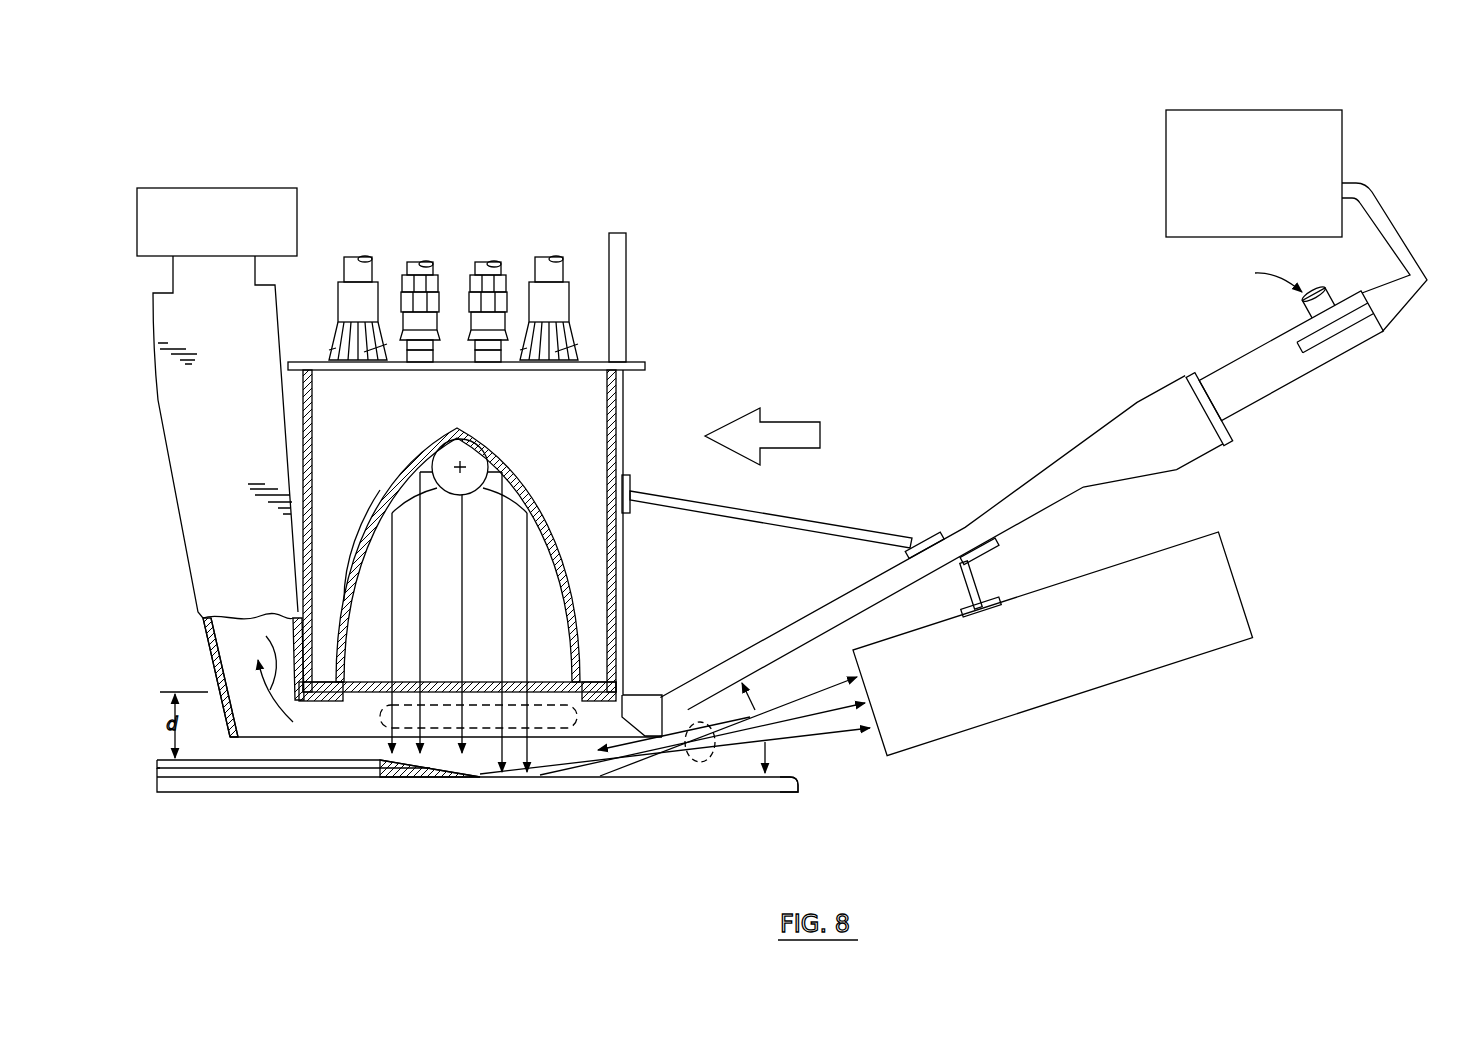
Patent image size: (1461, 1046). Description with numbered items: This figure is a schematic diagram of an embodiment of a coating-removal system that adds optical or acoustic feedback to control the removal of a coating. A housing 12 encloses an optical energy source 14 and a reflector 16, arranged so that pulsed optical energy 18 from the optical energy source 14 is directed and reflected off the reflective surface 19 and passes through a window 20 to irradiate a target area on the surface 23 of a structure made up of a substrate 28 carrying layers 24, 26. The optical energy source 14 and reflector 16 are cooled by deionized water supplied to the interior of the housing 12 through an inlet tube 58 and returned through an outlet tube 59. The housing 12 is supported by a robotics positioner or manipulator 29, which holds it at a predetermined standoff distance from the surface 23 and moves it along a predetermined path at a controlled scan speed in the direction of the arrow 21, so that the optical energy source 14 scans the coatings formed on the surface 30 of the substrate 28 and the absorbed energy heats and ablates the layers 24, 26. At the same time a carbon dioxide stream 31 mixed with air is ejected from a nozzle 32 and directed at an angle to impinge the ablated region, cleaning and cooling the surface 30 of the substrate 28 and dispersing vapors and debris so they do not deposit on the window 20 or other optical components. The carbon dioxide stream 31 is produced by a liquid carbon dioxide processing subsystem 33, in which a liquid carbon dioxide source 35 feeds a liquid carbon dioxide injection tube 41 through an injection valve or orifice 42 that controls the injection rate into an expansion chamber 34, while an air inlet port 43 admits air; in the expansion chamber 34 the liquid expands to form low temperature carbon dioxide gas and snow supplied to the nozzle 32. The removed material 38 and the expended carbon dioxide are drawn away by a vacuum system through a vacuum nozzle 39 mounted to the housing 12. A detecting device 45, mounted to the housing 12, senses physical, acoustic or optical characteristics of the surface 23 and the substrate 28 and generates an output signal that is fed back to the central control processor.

The housing 12 is at (612, 418).
The optical energy source 14 is at (465, 465).
The reflector 16 is at (410, 468).
The optical energy 18 is at (527, 528).
The reflective surface 19 is at (360, 632).
The window 20 is at (368, 695).
The scan direction arrow 21 is at (798, 420).
The surface of structure 23 is at (287, 762).
The layer 24 is at (168, 762).
The layer 26 is at (190, 772).
The substrate 28 is at (232, 783).
The manipulator 29 is at (626, 291).
The surface of substrate 30 is at (800, 772).
The carbon dioxide stream 31 is at (633, 728).
The nozzle 32 is at (939, 557).
The liquid carbon dioxide processing subsystem 33 is at (1051, 463).
The expansion chamber 34 is at (1291, 356).
The liquid carbon dioxide source 35 is at (1236, 110).
The ablated and pyrolyzed material 38 is at (268, 671).
The vacuum nozzle 39 is at (173, 494).
The liquid carbon dioxide injection tube 41 is at (1403, 240).
The injection valve or orifice 42 is at (1335, 328).
The air inlet port 43 is at (1317, 301).
The detecting device 45 is at (1120, 680).
The inlet tube 58 is at (422, 262).
The outlet tube 59 is at (488, 262).